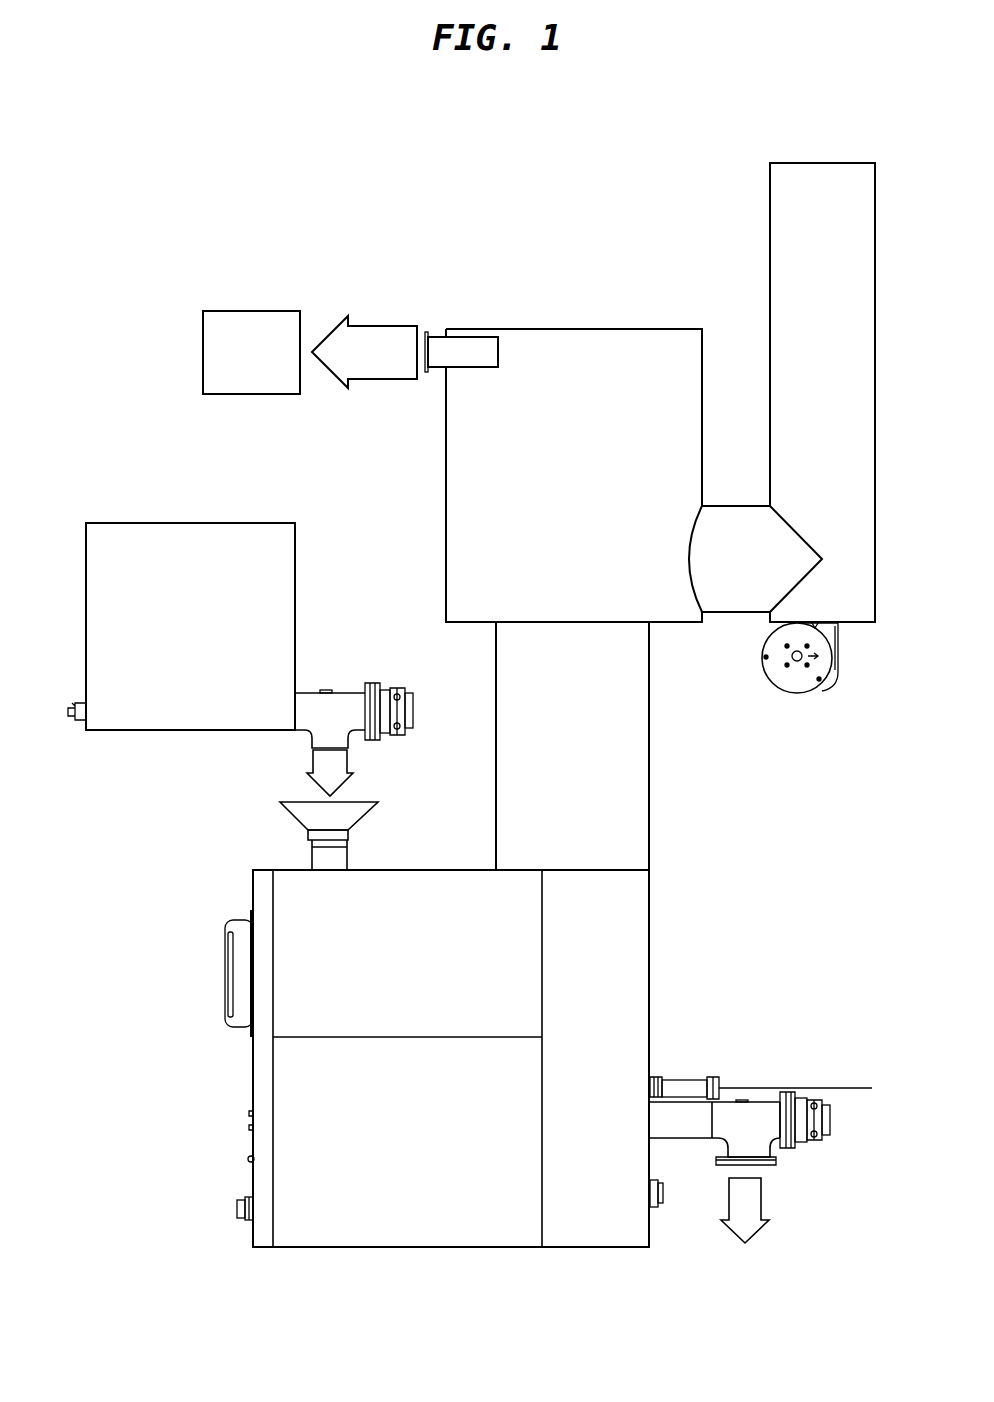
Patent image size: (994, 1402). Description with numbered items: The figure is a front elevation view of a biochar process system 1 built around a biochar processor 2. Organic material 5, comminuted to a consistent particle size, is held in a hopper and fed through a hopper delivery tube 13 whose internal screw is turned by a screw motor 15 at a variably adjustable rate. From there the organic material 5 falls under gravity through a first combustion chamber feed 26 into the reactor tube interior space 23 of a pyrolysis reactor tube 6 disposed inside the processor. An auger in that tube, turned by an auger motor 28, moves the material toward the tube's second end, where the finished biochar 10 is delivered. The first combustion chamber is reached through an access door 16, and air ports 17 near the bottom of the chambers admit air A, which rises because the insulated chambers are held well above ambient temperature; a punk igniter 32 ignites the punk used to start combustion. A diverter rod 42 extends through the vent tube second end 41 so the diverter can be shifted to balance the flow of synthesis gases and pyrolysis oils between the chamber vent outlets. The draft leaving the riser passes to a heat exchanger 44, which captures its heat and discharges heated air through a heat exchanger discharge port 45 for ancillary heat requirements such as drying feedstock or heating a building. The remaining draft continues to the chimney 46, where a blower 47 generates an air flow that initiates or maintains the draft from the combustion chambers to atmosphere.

The biochar process system 1 is at (251, 225).
The air / atmosphere A is at (815, 125).
The biochar processor 2 is at (238, 866).
The organic material 5 is at (330, 773).
The pyrolysis reactor tube 6 is at (680, 1140).
The biochar 10 is at (745, 1210).
The hopper delivery tube 13 is at (338, 693).
The screw motor 15 is at (412, 690).
The access door 16 is at (225, 972).
The air port 17 is at (237, 1210).
The reactor tube interior space 23 is at (772, 1165).
The first combustion chamber feed 26 is at (358, 806).
The auger motor 28 is at (830, 1118).
The punk igniter 32 is at (250, 1159).
The vent tube second end 41 is at (683, 1077).
The diverter rod 42 is at (808, 1088).
The heat exchanger 44 is at (645, 382).
The heat exchanger discharge port 45 is at (427, 332).
The chimney 46 is at (810, 216).
The blower 47 is at (819, 679).